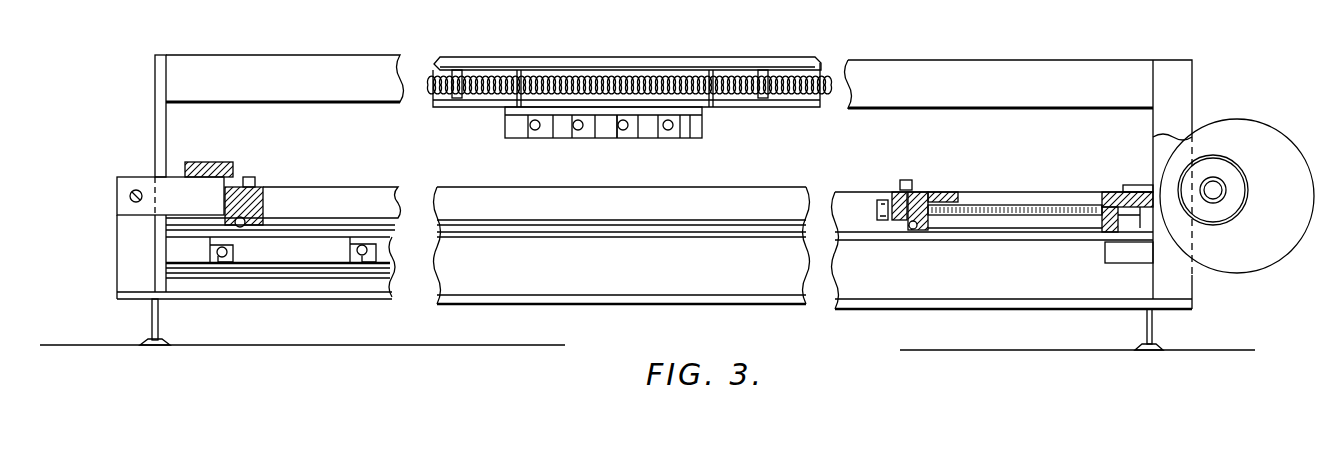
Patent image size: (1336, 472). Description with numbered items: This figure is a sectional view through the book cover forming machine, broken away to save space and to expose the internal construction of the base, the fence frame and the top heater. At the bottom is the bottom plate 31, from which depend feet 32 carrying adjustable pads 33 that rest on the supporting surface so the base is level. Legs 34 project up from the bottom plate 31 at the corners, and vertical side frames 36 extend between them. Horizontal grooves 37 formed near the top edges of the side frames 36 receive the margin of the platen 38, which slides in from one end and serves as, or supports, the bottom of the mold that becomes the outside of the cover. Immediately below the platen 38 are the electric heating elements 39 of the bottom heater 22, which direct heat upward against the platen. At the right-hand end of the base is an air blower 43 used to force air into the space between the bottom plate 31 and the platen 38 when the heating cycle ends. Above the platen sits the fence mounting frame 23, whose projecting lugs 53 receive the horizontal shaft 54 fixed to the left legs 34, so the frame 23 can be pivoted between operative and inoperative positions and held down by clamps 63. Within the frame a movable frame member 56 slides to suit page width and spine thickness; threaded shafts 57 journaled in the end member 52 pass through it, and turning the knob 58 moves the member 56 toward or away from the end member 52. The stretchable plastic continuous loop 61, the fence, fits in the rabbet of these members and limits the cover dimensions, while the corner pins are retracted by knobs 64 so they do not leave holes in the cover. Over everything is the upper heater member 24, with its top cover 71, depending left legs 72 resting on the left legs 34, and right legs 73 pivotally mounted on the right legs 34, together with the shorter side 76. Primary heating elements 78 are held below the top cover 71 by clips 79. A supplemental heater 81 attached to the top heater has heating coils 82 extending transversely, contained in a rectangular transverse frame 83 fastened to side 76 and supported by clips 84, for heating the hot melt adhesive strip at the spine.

The bottom heater 22 is at (495, 257).
The frame 23 is at (229, 164).
The upper heater member 24 is at (790, 61).
The bottom plate 31 is at (220, 300).
The feet 32 is at (152, 324).
The adjustable pads 33 is at (170, 344).
The legs 34 is at (122, 247).
The side frames 36 is at (351, 236).
The horizontal grooves 37 is at (317, 236).
The platen 38 is at (283, 217).
The electric heating elements 39 is at (232, 251).
The air blower 43 is at (1243, 143).
The end member 52 is at (260, 188).
The lugs 53 is at (170, 192).
The shaft 54 is at (129, 196).
The movable frame member 56 is at (941, 193).
The threaded shafts 57 is at (1000, 196).
The knob 58 is at (880, 200).
The stretchable plastic continuous loop 61 is at (364, 214).
The clamps 63 is at (1125, 186).
The knobs 64 is at (906, 181).
The top cover 71 is at (497, 57).
The left legs 72 is at (160, 101).
The right legs 73 is at (1182, 108).
The side 76 is at (884, 105).
The primary heating elements 78 is at (580, 84).
The clips 79 is at (456, 75).
The supplemental heater 81 is at (635, 141).
The heating coils 82 is at (535, 131).
The rectangular transverse frame 83 is at (705, 125).
The clips 84 is at (578, 131).